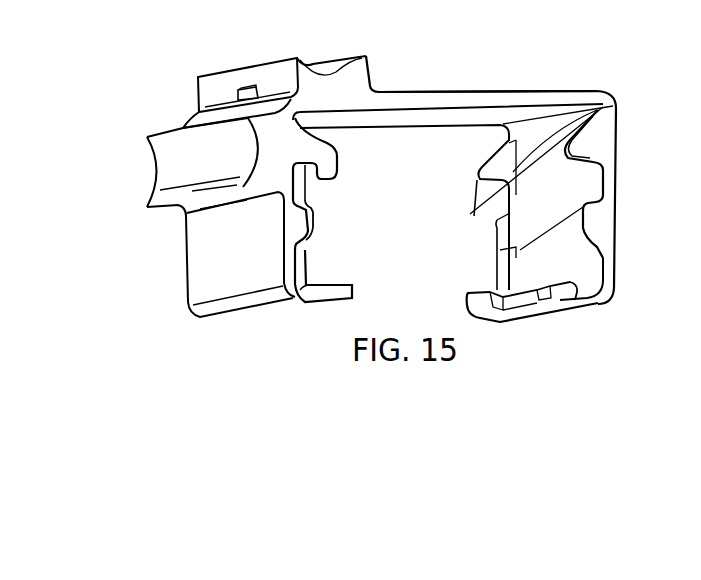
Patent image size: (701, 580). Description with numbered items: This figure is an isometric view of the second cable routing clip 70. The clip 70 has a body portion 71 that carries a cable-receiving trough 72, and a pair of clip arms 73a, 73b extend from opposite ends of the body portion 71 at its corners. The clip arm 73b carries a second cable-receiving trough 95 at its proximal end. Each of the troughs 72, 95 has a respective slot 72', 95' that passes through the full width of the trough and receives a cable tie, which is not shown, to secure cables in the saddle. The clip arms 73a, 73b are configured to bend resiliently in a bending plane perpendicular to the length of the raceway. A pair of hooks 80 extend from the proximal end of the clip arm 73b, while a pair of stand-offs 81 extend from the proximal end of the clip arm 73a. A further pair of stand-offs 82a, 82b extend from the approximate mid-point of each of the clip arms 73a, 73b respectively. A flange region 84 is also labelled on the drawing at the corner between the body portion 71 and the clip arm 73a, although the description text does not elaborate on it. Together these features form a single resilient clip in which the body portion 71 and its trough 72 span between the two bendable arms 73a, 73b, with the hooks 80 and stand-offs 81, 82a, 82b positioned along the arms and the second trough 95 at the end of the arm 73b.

The second clip 70 is at (176, 56).
The body portion 71 is at (437, 90).
The cable-receiving trough 72 is at (274, 65).
The slot 72' is at (232, 50).
The clip arm 73a is at (618, 272).
The clip arm 73b is at (200, 254).
The hooks 80 is at (338, 163).
The stand-offs 81 is at (510, 183).
The stand-off 82a is at (497, 257).
The stand-off 82b is at (312, 215).
The flange 84 is at (604, 107).
The second cable-receiving trough 95 is at (175, 167).
The slot 95' is at (235, 231).